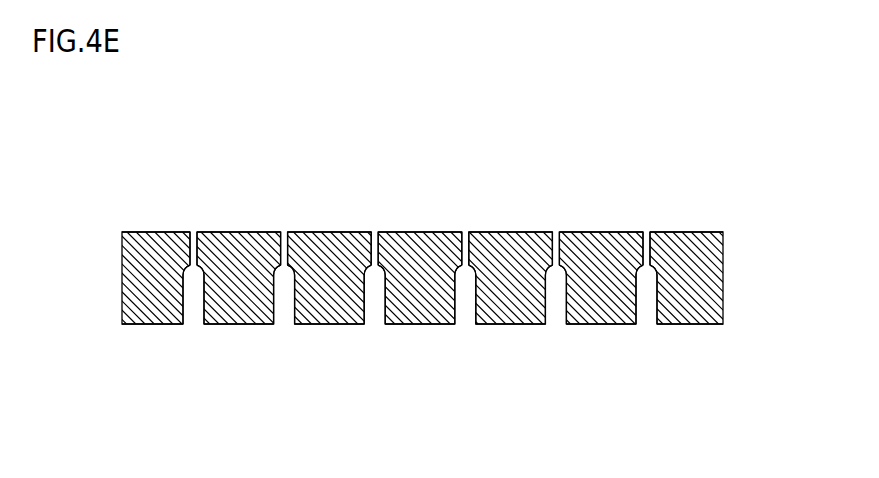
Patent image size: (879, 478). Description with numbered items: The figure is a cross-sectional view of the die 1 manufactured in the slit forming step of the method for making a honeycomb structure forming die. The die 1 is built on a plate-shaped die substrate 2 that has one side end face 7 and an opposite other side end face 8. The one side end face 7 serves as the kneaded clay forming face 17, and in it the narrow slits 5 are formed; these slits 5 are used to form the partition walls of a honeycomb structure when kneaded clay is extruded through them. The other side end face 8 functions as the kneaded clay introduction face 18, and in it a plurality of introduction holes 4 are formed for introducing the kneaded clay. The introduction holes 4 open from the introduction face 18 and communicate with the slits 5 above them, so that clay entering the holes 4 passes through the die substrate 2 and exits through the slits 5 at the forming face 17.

The die 1 is at (413, 228).
The die substrate 2 is at (152, 273).
The introduction holes 4 is at (197, 290).
The slits 5 is at (193, 232).
The one side end face 7 is at (422, 183).
The kneaded clay forming face 17 is at (428, 232).
The other side end face 8 is at (422, 373).
The kneaded clay introduction face 18 is at (430, 325).